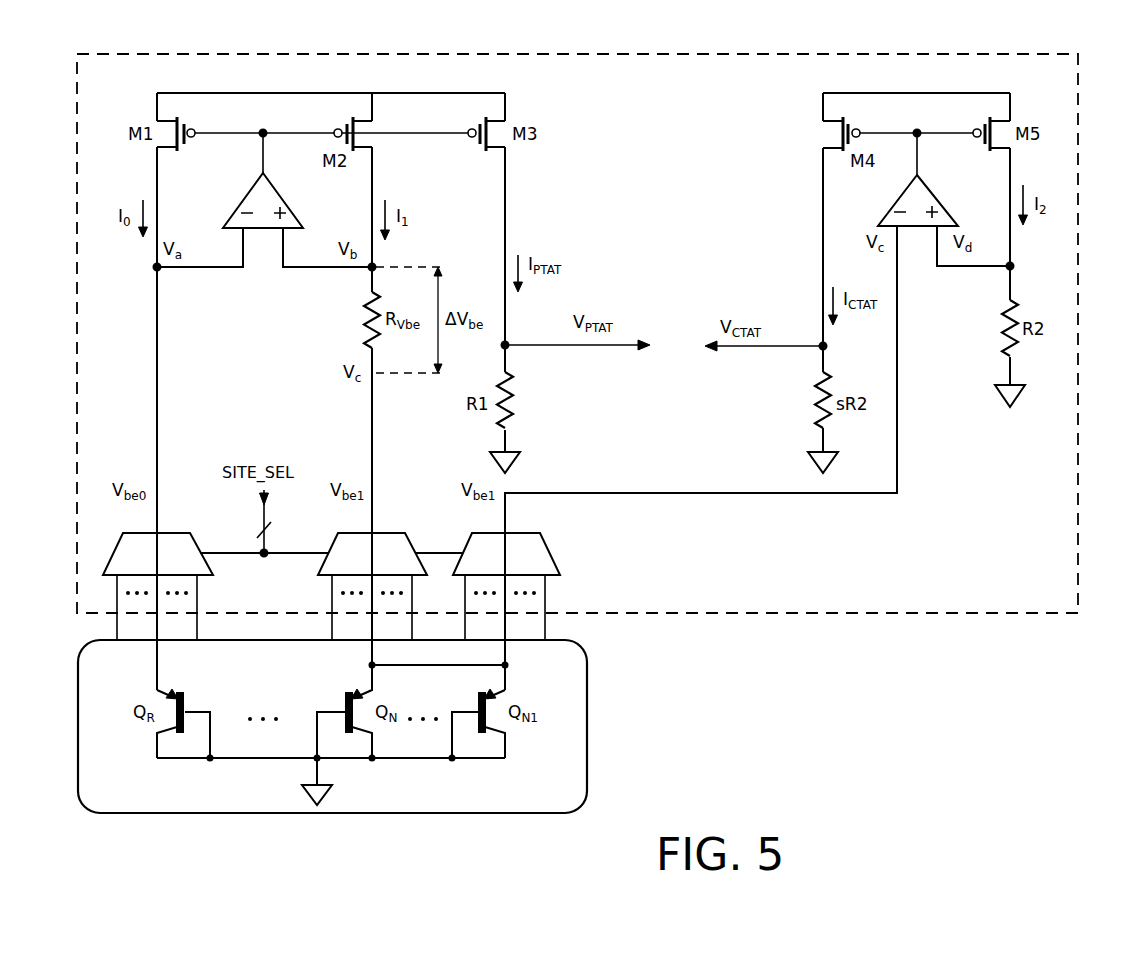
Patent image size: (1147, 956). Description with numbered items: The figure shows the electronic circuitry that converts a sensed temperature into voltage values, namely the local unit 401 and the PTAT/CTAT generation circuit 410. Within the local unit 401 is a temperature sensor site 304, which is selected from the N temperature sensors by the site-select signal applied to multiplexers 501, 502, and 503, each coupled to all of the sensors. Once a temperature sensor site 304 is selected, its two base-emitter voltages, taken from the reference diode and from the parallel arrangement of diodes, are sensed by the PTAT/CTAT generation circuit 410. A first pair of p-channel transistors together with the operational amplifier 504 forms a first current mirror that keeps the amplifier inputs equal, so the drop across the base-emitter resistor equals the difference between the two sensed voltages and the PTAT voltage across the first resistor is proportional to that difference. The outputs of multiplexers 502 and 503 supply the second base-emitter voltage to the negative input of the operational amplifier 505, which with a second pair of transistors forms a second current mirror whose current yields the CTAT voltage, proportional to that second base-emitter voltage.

The PTAT/CTAT generation circuit 410 is at (1078, 92).
The operational amplifier 504 is at (243, 204).
The operational amplifier 505 is at (899, 204).
The multiplexer 501 is at (182, 533).
The multiplexer 502 is at (394, 533).
The multiplexer 503 is at (553, 550).
The temperature sensor site 304 is at (537, 702).
The local unit 401 is at (361, 726).